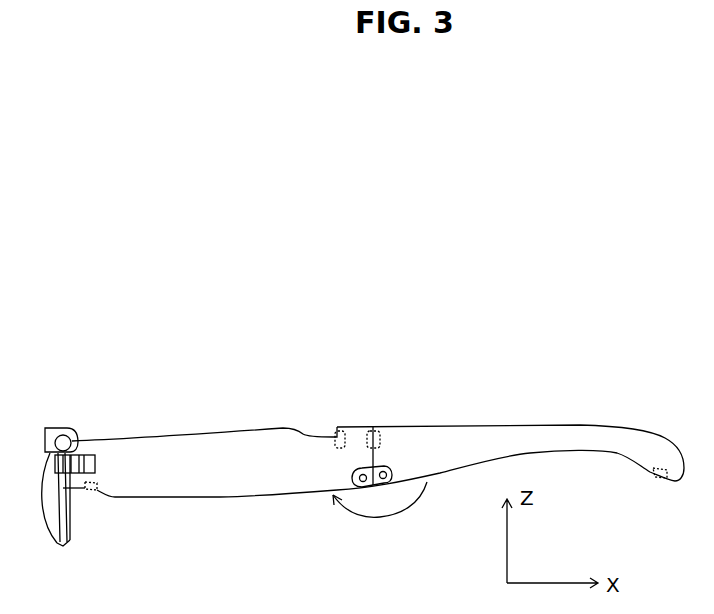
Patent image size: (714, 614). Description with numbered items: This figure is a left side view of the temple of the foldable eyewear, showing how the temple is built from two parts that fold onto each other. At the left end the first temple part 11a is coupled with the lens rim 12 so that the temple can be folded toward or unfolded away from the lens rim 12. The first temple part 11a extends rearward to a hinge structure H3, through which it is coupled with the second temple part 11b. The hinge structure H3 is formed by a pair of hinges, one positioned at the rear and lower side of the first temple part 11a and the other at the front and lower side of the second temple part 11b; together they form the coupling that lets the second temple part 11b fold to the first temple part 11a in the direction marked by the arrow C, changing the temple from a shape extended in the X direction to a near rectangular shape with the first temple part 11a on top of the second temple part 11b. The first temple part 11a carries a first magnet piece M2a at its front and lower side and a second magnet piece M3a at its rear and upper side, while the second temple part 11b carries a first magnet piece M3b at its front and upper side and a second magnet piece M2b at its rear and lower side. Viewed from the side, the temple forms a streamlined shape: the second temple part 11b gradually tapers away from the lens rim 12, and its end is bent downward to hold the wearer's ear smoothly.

The first temple part 11a is at (177, 450).
The second temple part 11b is at (478, 442).
The lens rim 12 is at (67, 543).
The first magnet piece of the first temple part M2a is at (97, 492).
The second magnet piece of the second temple part M2b is at (660, 477).
The second magnet piece of the first temple part M3a is at (367, 432).
The first magnet piece of the second temple part M3b is at (377, 432).
The hinge structure H3 is at (363, 483).
The folding direction arrow C is at (380, 516).